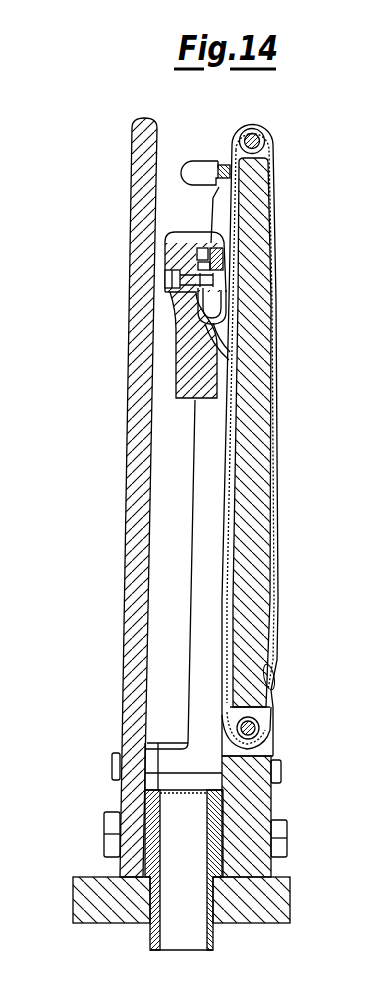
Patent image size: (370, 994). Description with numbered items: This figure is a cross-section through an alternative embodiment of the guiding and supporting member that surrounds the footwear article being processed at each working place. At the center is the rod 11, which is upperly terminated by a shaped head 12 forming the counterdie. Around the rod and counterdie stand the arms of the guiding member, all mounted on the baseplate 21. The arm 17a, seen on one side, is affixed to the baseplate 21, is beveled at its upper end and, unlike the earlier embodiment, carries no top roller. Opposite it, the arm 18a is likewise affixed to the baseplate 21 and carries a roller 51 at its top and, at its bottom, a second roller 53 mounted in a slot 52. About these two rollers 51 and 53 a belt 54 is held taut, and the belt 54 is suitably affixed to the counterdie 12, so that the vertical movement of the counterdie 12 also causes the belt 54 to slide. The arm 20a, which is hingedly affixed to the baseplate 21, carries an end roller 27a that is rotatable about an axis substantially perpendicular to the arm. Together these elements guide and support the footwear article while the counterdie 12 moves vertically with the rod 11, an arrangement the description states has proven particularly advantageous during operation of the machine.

The arm 17a is at (137, 441).
The end roller 27a is at (197, 162).
The roller 51 is at (264, 144).
The belt 54 is at (273, 270).
The arm 18a is at (257, 432).
The shaped head (counterdie) 12 is at (172, 253).
The rod 11 is at (180, 378).
The arm 20a is at (202, 530).
The second roller 53 is at (261, 727).
The slot 52 is at (262, 748).
The baseplate 21 is at (250, 817).